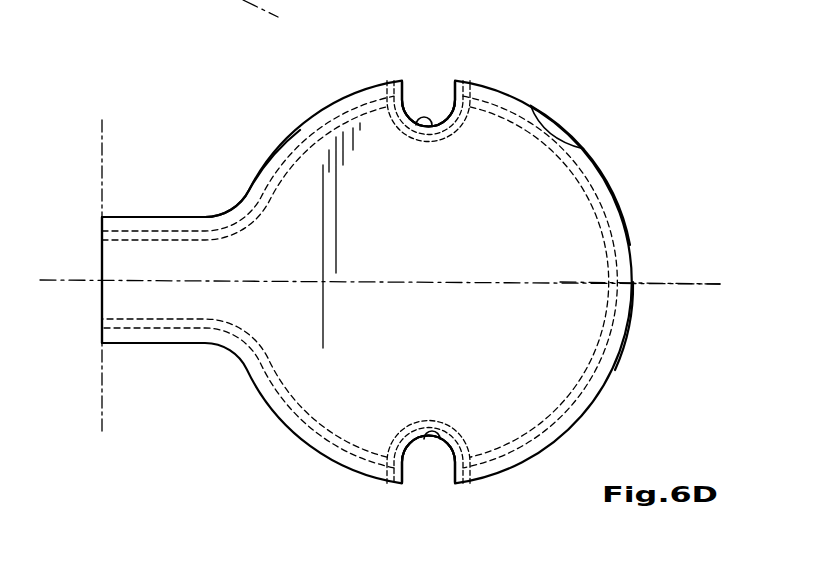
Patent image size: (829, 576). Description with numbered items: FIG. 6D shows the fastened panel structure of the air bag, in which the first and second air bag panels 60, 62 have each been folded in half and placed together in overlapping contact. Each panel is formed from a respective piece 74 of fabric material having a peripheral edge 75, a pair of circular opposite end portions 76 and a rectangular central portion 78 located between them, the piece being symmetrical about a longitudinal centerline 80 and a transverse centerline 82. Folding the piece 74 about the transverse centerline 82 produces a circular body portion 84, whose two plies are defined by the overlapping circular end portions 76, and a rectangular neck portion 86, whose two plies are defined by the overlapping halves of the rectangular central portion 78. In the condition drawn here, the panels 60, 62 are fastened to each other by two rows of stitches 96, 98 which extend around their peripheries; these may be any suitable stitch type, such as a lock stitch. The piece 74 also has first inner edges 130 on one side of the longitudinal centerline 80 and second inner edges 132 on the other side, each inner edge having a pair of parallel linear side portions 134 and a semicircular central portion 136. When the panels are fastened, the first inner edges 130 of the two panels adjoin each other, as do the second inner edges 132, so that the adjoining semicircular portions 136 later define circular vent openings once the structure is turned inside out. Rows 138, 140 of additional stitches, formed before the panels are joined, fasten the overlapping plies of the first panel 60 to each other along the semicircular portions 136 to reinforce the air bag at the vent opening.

The first air bag panel 60 is at (521, 90).
The second air bag panel 62 is at (570, 117).
The piece of fabric material 74 is at (610, 165).
The peripheral edge 75 is at (627, 333).
The circular opposite end portions 76 is at (290, 203).
The rectangular central portion 78 is at (188, 263).
The longitudinal centerline 80 is at (715, 283).
The transverse centerline 82 is at (102, 146).
The circular body portion 84 is at (332, 165).
The rectangular neck portion 86 is at (115, 263).
The row of stitches 96 is at (602, 203).
The row of stitches 98 is at (602, 238).
The first inner edges 130 is at (414, 104).
The second inner edges 132 is at (412, 458).
The linear side portions 134 is at (413, 82).
The semicircular central portion 136 is at (423, 122).
The row of additional stitches 138 is at (457, 118).
The row of additional stitches 140 is at (450, 133).